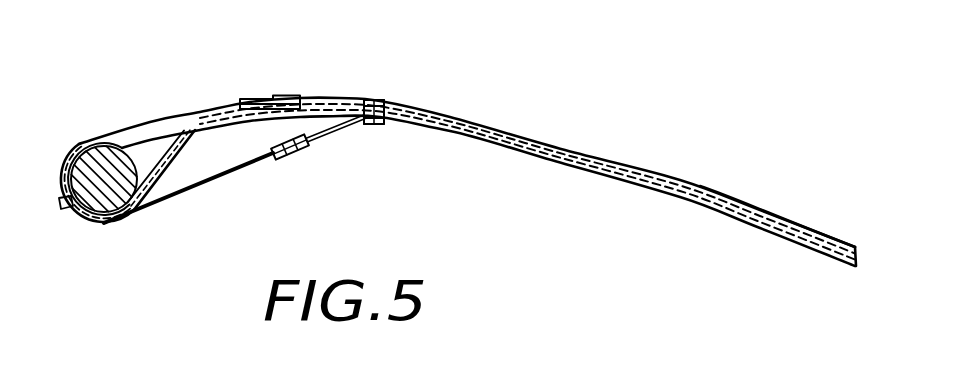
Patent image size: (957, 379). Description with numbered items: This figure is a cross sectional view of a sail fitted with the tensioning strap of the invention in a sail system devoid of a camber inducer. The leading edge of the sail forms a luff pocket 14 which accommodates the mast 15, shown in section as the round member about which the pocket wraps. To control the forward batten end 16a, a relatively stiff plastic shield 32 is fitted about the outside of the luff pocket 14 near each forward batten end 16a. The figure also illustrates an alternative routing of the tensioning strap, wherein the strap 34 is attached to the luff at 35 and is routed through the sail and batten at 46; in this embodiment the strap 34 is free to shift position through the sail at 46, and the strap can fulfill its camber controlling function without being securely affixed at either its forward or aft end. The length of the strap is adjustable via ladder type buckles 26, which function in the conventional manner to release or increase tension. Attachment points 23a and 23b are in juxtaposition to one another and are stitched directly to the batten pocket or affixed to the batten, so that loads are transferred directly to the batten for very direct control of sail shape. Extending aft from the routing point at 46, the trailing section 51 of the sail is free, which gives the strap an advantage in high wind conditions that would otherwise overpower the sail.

The luff pocket 14 is at (93, 138).
The plastic shield 32 is at (117, 132).
The forward batten end 16a is at (152, 131).
The mast 15 is at (103, 198).
The attachment at the luff 35 is at (67, 209).
The strap 34 is at (183, 192).
The ladder type buckle 26 is at (283, 97).
The attachment point 23a is at (378, 125).
The attachment point 23b is at (378, 100).
The routing point through sail and batten 46 is at (386, 108).
The trailing section 51 is at (607, 181).